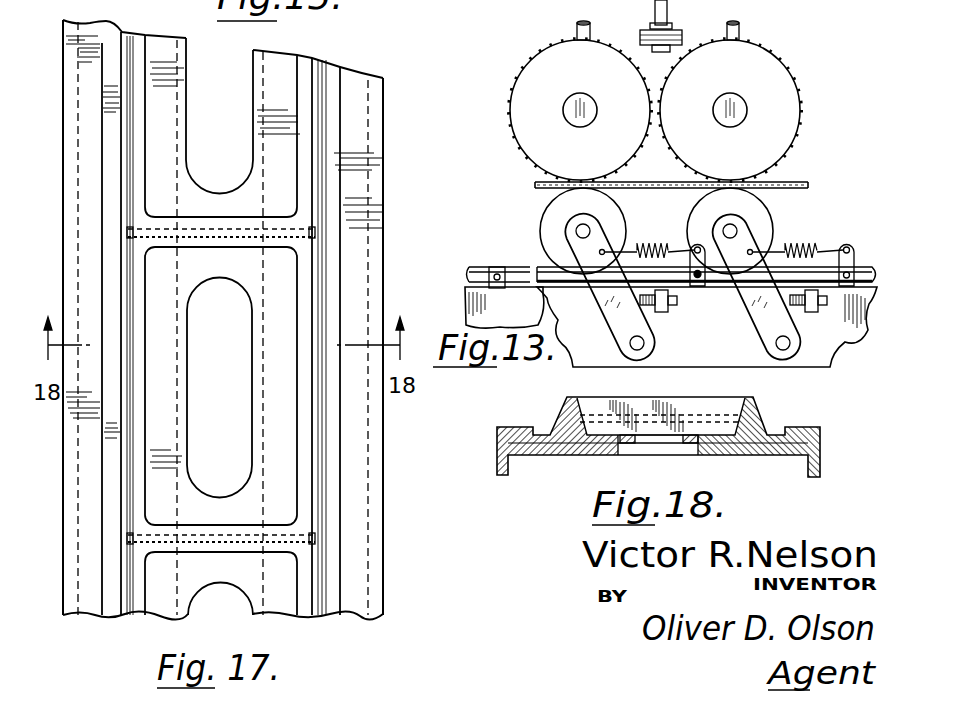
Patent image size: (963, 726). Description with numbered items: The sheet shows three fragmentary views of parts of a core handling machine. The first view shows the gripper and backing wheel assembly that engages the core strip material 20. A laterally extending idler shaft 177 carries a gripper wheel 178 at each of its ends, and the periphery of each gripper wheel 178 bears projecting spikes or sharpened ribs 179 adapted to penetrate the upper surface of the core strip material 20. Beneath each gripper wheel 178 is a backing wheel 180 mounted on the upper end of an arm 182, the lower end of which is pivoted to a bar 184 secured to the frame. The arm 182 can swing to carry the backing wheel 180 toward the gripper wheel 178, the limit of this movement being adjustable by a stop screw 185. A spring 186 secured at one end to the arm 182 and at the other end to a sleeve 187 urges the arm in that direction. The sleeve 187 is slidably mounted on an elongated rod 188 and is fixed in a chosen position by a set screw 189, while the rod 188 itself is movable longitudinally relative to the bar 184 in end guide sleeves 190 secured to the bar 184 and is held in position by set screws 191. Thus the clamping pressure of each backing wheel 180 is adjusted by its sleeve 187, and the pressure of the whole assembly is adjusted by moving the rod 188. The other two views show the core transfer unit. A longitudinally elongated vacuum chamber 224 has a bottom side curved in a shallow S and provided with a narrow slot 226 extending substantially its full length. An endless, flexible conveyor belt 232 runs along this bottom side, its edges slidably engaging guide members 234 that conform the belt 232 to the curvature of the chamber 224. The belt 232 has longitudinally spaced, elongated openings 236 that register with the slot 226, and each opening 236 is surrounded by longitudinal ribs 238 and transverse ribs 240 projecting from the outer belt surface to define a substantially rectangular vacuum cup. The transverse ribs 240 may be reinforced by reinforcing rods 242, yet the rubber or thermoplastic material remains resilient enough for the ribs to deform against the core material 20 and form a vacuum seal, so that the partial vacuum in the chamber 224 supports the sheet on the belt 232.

In FIG. 13, the core strip material 20 is at (800, 182).
In FIG. 13, the idler shaft 177 is at (720, 98).
In FIG. 13, the gripper wheel 178 is at (535, 82).
In FIG. 13, the projecting spikes or sharpened ribs 179 is at (783, 60).
In FIG. 13, the backing wheel 180 is at (545, 205).
In FIG. 13, the arm 182 is at (601, 300).
In FIG. 13, the bar 184 is at (468, 296).
In FIG. 13, the stop screw 185 is at (675, 313).
In FIG. 13, the spring 186 is at (650, 247).
In FIG. 13, the sleeve 187 is at (851, 257).
In FIG. 13, the elongated rod 188 is at (556, 267).
In FIG. 13, the set screw 189 is at (718, 336).
In FIG. 13, the end guide sleeve 190 is at (490, 266).
In FIG. 13, the set screw 191 is at (508, 313).
In FIG. 18, the vacuum chamber 224 is at (515, 470).
In FIG. 17, the narrow slot 226 is at (262, 189).
In FIG. 18, the narrow slot 226 is at (633, 449).
In FIG. 17, the endless flexible conveyor belt 232 is at (333, 227).
In FIG. 18, the endless flexible conveyor belt 232 is at (765, 428).
In FIG. 17, the guide member 234 is at (63, 242).
In FIG. 18, the guide member 234 is at (497, 430).
In FIG. 17, the elongated opening 236 is at (189, 302).
In FIG. 18, the elongated opening 236 is at (667, 440).
In FIG. 17, the longitudinal rib 238 is at (310, 374).
In FIG. 18, the longitudinal rib 238 is at (551, 400).
In FIG. 17, the transverse rib 240 is at (242, 541).
In FIG. 18, the transverse rib 240 is at (647, 397).
In FIG. 17, the reinforcing rod 242 is at (190, 236).
In FIG. 18, the reinforcing rod 242 is at (703, 412).